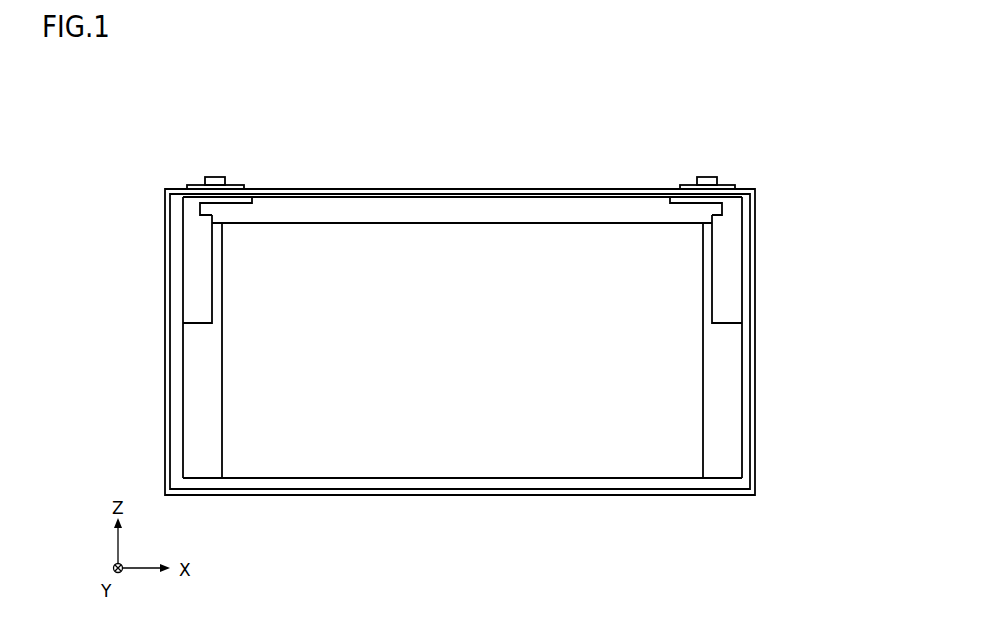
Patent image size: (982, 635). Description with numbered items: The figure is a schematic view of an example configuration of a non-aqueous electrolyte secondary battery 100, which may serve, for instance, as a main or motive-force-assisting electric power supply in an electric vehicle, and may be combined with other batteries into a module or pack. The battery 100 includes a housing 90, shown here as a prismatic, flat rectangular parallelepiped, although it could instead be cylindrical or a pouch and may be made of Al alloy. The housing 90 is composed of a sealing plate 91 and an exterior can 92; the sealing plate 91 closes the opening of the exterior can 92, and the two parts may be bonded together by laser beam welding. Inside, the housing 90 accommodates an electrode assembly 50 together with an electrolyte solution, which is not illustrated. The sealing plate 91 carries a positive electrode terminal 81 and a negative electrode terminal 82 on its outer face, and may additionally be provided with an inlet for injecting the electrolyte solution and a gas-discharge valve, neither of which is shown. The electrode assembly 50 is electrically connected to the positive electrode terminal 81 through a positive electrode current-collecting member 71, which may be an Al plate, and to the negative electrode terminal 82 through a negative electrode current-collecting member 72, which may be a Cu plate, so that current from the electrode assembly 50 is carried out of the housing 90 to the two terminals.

The battery 100 is at (171, 122).
The housing 90 is at (833, 112).
The sealing plate 91 is at (587, 189).
The exterior can 92 is at (757, 212).
The positive electrode terminal 81 is at (708, 176).
The negative electrode terminal 82 is at (215, 176).
The positive electrode current-collecting member 71 is at (742, 277).
The negative electrode current-collecting member 72 is at (190, 270).
The electrode assembly 50 is at (462, 438).